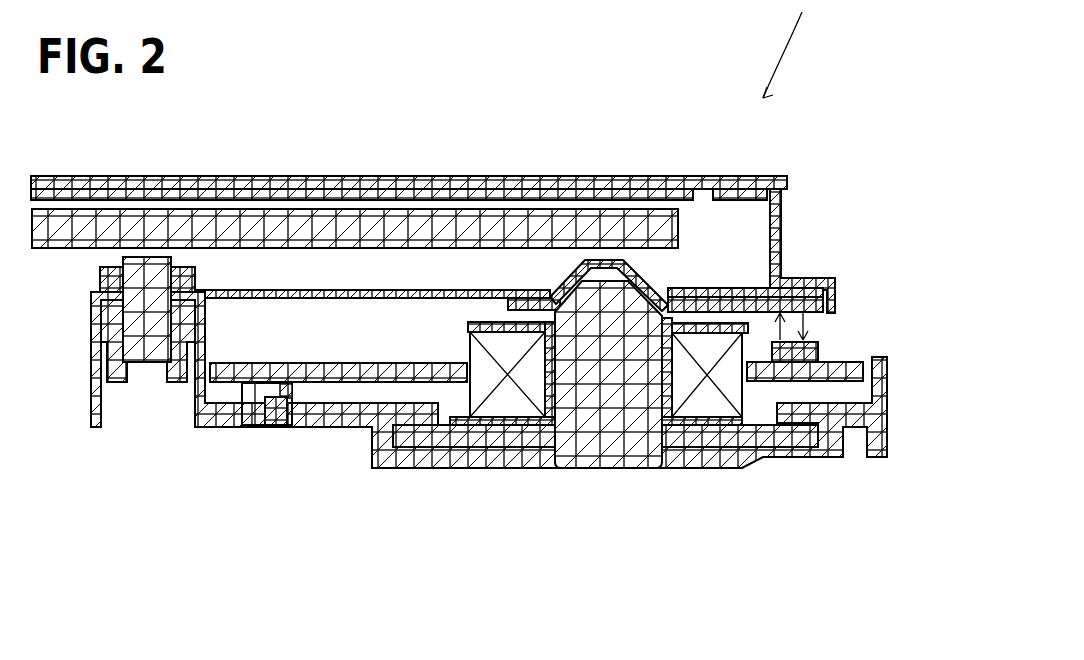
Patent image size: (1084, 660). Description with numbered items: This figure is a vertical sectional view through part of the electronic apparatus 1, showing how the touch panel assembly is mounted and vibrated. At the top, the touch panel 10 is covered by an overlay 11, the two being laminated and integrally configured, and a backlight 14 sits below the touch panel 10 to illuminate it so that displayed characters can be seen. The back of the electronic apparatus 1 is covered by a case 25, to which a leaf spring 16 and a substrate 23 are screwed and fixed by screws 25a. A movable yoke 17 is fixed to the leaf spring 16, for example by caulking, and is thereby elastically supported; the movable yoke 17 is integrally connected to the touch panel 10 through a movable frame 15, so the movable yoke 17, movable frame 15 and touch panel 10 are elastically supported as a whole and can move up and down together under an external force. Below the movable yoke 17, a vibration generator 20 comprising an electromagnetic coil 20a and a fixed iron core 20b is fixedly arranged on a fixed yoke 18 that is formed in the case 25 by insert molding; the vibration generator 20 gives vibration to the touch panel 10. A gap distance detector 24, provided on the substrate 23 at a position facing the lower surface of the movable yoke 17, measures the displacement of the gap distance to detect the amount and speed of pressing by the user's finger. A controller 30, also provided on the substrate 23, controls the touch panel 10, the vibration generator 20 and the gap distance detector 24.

The electronic apparatus 1 is at (794, 49).
The touch panel 10 is at (409, 145).
The overlay 11 is at (275, 183).
The backlight 14 is at (50, 233).
The movable frame 15 is at (782, 228).
The leaf spring 16 is at (333, 290).
The movable yoke 17 is at (565, 285).
The fixed yoke 18 is at (718, 440).
The vibration generator 20 is at (599, 457).
The electromagnetic coil 20a is at (503, 398).
The fixed iron core 20b is at (595, 437).
The substrate 23 is at (340, 363).
The gap distance detector 24 is at (823, 353).
The case 25 is at (207, 407).
The screw 25a is at (132, 313).
The controller 30 is at (418, 378).